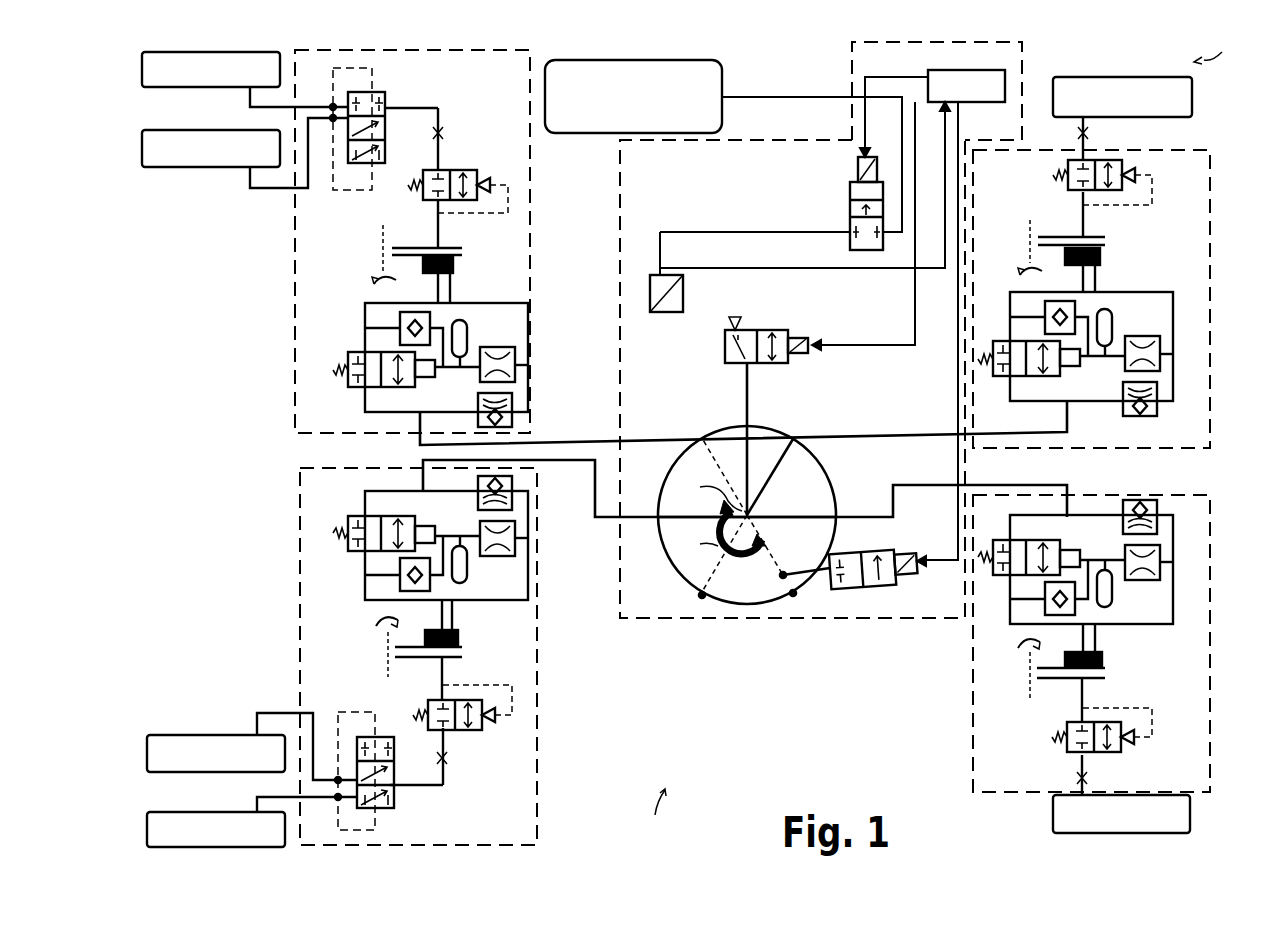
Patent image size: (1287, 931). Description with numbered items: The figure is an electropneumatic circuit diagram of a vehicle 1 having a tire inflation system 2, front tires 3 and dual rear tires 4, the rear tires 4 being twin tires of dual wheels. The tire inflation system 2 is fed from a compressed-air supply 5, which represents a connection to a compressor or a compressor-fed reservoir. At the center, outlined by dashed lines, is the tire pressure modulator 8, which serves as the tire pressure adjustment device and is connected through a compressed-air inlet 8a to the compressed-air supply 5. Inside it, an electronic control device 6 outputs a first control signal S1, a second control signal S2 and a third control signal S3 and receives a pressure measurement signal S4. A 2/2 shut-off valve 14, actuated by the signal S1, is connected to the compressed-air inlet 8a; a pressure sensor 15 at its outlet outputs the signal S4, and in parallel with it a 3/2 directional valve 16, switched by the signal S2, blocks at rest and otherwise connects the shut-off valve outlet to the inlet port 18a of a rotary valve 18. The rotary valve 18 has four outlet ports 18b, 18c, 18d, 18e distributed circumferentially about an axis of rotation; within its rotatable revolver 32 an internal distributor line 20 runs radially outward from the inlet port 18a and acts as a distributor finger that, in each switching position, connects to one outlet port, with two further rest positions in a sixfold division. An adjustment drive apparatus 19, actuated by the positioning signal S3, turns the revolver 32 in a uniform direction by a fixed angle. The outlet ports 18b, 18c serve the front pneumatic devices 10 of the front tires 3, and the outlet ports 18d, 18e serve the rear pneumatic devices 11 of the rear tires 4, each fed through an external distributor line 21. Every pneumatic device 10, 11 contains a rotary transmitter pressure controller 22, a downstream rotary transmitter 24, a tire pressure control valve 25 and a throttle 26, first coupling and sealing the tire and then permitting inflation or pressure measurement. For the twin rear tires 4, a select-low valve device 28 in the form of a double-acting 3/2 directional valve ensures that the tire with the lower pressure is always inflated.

The vehicle 1 is at (1210, 41).
The tire inflation system 2 is at (654, 820).
The front tires 3 is at (1093, 97).
The rear tires 4 is at (170, 80).
The compressed-air supply 5 is at (578, 62).
The electronic control device 6 is at (988, 80).
The tire pressure modulator 8 is at (657, 618).
The compressed-air inlet 8a is at (848, 97).
The pneumatic device 10 is at (1210, 227).
The pneumatic device 11 is at (295, 290).
The 2/2 shut-off valve 14 is at (850, 183).
The pressure sensor 15 is at (661, 274).
The 3/2 directional valve 16 is at (767, 332).
The rotary valve 18 is at (741, 605).
The inlet port 18a is at (752, 426).
The outlet port 18b is at (792, 434).
The outlet port 18c is at (834, 514).
The outlet port 18d is at (653, 521).
The outlet port 18e is at (713, 422).
The adjustment drive apparatus 19 is at (880, 588).
The internal distributor line 20 is at (800, 443).
The external distributor line 21 is at (575, 442).
The rotary transmitter pressure controller 22 is at (343, 383).
The rotary transmitter 24 is at (459, 250).
The tire pressure control valve 25 is at (487, 177).
The throttle 26 is at (442, 134).
The select-low valve device 28 is at (377, 70).
The revolver 32 is at (732, 582).
The first control signal S1 is at (893, 77).
The second control signal S2 is at (824, 343).
The third control signal S3 is at (956, 386).
The pressure measurement signal S4 is at (710, 270).